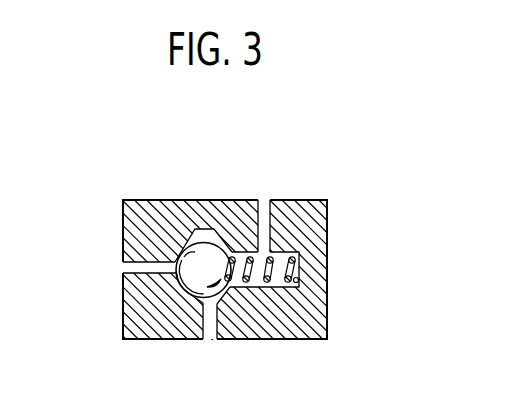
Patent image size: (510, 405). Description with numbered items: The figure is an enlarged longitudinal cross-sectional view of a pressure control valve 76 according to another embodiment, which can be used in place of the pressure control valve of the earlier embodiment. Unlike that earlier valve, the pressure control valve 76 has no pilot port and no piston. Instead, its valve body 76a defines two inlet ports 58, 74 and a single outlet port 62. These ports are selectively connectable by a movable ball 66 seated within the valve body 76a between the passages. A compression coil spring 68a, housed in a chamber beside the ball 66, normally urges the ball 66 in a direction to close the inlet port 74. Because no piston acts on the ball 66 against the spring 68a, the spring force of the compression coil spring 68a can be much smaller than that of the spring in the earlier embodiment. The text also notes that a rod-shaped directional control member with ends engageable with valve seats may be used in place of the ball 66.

The pressure control valve 76 is at (184, 184).
The valve body 76a is at (130, 220).
The inlet port 74 is at (125, 268).
The ball 66 is at (213, 256).
The inlet port 58 is at (266, 209).
The compression coil spring 68a is at (297, 268).
The outlet port 62 is at (210, 322).